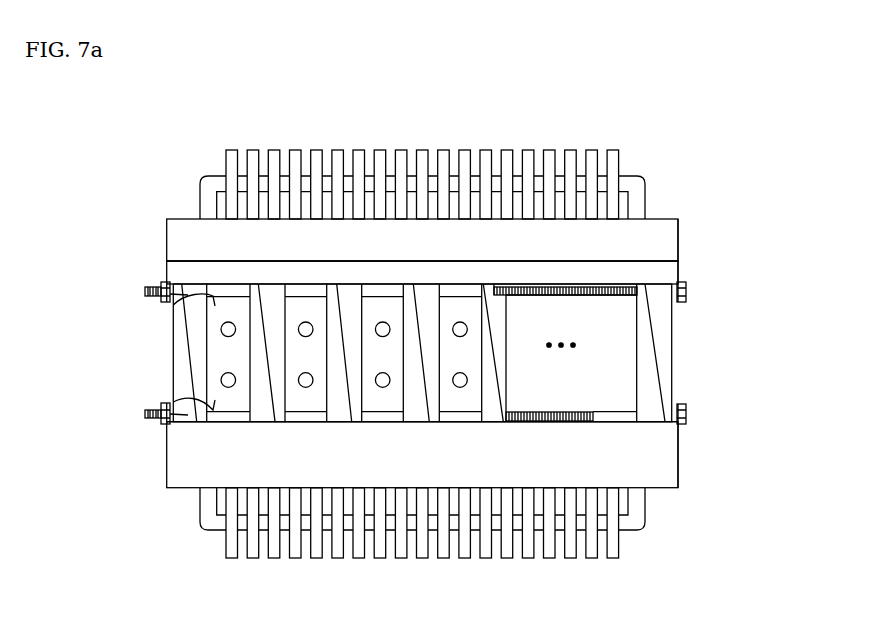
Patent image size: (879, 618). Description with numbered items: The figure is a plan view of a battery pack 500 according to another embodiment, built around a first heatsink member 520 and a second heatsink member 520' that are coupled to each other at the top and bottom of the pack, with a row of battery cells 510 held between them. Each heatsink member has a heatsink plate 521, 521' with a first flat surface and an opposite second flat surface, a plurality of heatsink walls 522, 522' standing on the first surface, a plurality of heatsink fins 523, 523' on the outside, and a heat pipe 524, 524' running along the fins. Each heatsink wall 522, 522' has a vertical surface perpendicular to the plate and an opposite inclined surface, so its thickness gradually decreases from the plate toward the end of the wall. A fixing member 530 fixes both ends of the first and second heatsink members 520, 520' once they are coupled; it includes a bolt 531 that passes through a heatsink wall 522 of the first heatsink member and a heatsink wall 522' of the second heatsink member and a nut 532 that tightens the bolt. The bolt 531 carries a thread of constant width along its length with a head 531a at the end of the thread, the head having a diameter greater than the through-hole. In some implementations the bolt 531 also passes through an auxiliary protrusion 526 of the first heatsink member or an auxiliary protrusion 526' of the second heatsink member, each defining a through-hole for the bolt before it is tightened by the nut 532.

The battery pack 500 is at (71, 127).
The battery cell 510 is at (213, 352).
The first heatsink member 520 is at (362, 478).
The second heatsink member 520' is at (355, 230).
The heatsink plate 521 is at (388, 455).
The heatsink plate 521' is at (388, 240).
The heatsink wall 522 is at (388, 424).
The heatsink wall 522' is at (388, 283).
The heatsink fins 523 is at (358, 523).
The heatsink fins 523' is at (358, 184).
The heat pipe 524 is at (371, 509).
The heat pipe 524' is at (371, 199).
The auxiliary protrusion 526 is at (143, 412).
The auxiliary protrusion 526' is at (143, 296).
The fixing member 530 is at (657, 353).
The bolt 531 is at (620, 296).
The head 531a is at (686, 290).
The nut 532 is at (678, 261).